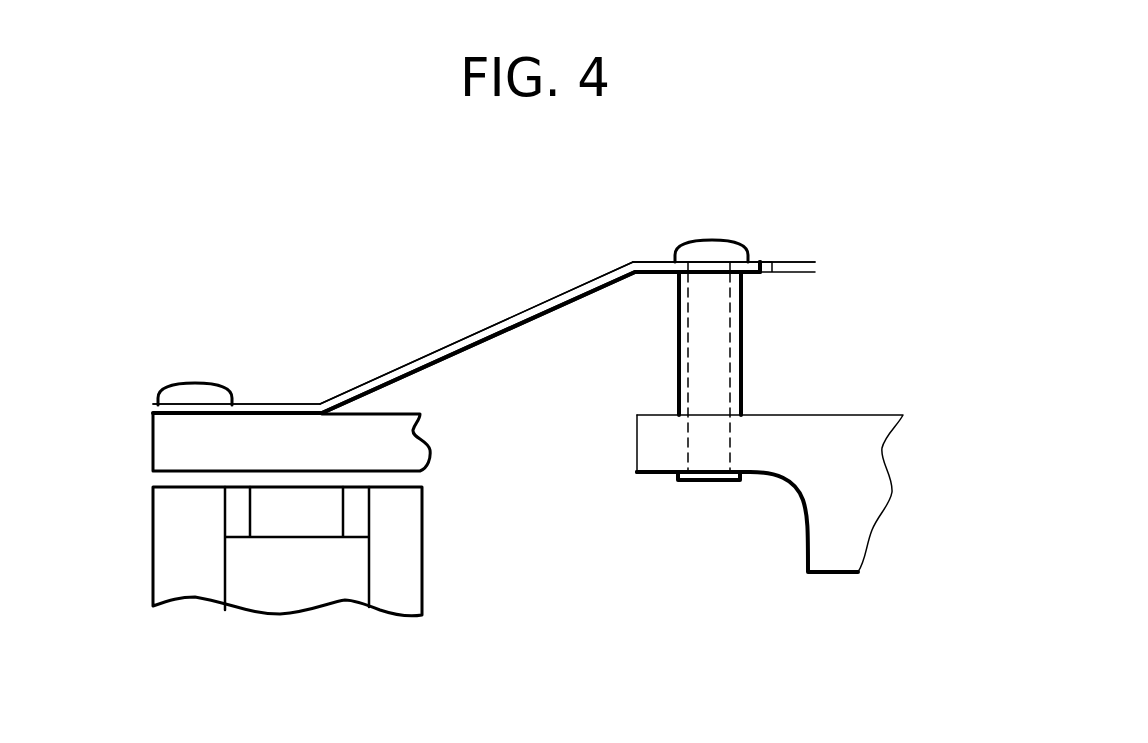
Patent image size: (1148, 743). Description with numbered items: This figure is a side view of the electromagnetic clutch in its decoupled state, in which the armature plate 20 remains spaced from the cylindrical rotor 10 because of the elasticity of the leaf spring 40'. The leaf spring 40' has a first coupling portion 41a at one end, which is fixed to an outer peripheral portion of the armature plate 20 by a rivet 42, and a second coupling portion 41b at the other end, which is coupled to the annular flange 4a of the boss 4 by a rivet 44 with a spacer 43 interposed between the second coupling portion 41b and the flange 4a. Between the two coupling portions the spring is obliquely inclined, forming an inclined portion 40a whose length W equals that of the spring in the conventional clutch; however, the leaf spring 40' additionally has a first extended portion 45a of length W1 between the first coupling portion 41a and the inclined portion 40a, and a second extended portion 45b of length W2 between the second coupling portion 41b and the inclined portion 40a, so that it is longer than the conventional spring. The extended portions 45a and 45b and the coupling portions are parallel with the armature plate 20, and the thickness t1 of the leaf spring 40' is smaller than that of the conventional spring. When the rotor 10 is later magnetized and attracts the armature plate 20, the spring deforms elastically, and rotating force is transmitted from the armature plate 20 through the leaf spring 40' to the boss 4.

The boss 4 is at (867, 415).
The annular flange 4a is at (652, 458).
The cylindrical rotor 10 is at (405, 577).
The armature plate 20 is at (163, 437).
The leaf spring 40' is at (478, 374).
The inclined portion 40a is at (523, 316).
The first coupling portion 41a is at (157, 408).
The second coupling portion 41b is at (763, 261).
The rivet 42 is at (183, 388).
The spacer 43 is at (735, 336).
The rivet 44 is at (712, 247).
The first extended portion 45a is at (265, 407).
The second extended portion 45b is at (653, 277).
The length of inclined portion W is at (296, 359).
The length of first extended portion W1 is at (228, 414).
The length of second extended portion W2 is at (633, 213).
The thickness of leaf spring t1 is at (803, 233).